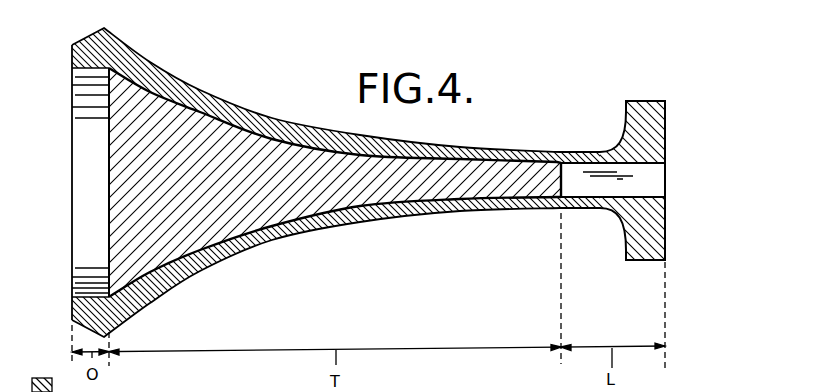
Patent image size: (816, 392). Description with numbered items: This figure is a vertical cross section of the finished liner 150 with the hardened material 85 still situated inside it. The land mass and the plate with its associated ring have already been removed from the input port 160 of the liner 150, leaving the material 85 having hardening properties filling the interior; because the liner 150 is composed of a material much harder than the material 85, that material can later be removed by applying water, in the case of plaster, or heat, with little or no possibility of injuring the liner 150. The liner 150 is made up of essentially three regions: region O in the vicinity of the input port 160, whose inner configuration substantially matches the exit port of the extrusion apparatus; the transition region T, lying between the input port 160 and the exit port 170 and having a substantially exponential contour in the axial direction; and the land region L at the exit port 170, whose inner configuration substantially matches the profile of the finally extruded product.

The material having hardening properties 85 is at (307, 203).
The liner 150 is at (470, 210).
The input port 160 is at (68, 197).
The exit port 170 is at (670, 182).